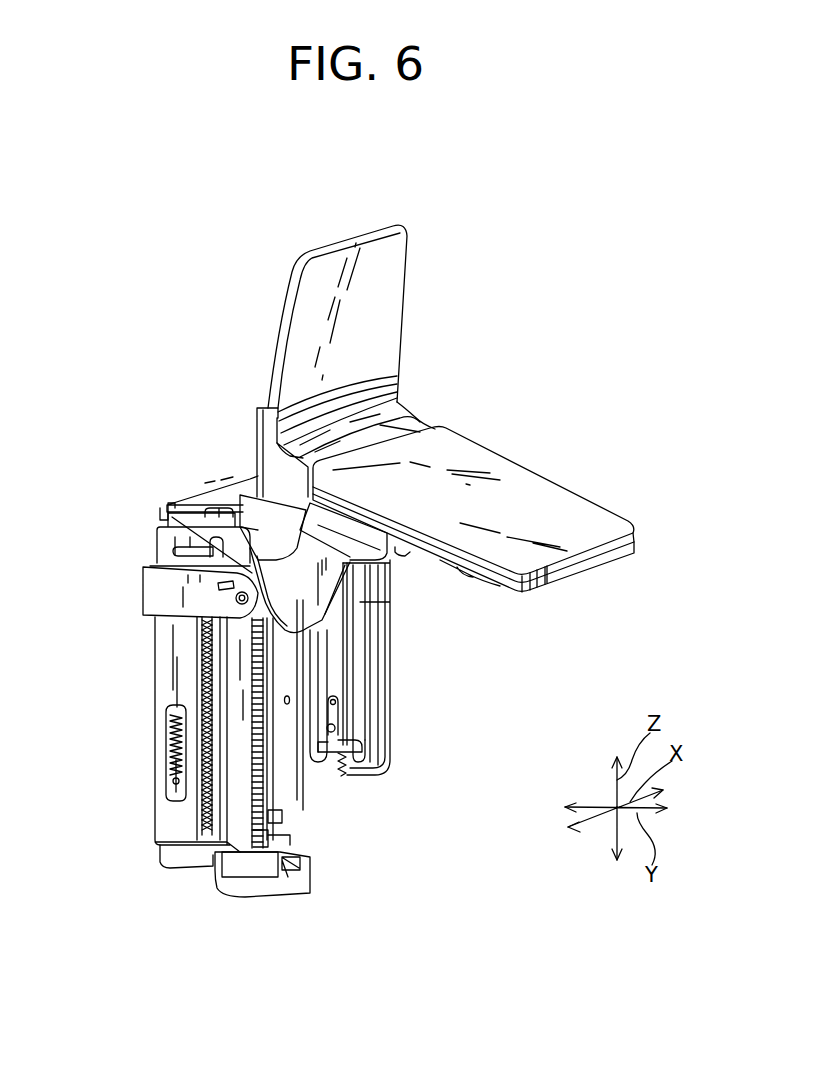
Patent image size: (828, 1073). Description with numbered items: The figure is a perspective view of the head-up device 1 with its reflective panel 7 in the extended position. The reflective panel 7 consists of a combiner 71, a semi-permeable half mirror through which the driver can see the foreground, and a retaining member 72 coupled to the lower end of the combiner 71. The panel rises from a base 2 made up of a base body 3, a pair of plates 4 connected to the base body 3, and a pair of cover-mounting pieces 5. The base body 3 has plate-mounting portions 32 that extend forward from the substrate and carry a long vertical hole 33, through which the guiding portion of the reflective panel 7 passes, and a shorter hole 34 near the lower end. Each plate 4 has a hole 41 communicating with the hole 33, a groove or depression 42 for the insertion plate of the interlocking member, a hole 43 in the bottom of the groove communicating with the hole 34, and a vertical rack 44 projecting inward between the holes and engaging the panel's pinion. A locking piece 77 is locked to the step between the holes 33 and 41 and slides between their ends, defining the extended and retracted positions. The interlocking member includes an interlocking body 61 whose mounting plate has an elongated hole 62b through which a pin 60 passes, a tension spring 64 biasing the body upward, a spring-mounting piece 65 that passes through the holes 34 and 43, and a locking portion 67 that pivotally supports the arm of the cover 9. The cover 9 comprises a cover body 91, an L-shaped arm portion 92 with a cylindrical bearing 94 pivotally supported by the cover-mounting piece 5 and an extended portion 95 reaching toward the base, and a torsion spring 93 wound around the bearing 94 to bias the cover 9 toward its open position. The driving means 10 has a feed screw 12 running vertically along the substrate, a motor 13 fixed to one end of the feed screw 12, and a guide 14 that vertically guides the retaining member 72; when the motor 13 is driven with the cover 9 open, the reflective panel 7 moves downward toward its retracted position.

The head-up device 1 is at (596, 245).
The base 2 is at (123, 634).
The base body 3 is at (146, 660).
The plate 4 is at (167, 719).
The cover-mounting piece 5 is at (155, 590).
The reflective panel 7 is at (416, 293).
The cover 9 is at (560, 476).
The driving means 10 is at (272, 898).
The feed screw 12 is at (258, 776).
The motor 13 is at (243, 879).
The guide 14 is at (313, 777).
The plate-mounting portion 32 is at (177, 681).
The hole 33 is at (287, 858).
The hole 34 is at (170, 790).
The hole 41 is at (360, 754).
The groove or depression 42 is at (344, 773).
The hole 43 is at (175, 801).
The rack 44 is at (221, 811).
The pin 60 is at (340, 742).
The interlocking body 61 is at (338, 727).
The elongated hole 62b is at (338, 704).
The tension spring 64 is at (163, 738).
The spring-mounting piece 65 is at (175, 763).
The locking portion 67 is at (160, 537).
The combiner 71 is at (407, 250).
The retaining member 72 is at (397, 398).
The locking piece 77 is at (168, 503).
The cover body 91 is at (500, 465).
The arm portion 92 is at (336, 598).
The torsion spring 93 is at (263, 562).
The bearing 94 is at (248, 598).
The extended portion 95 is at (176, 552).